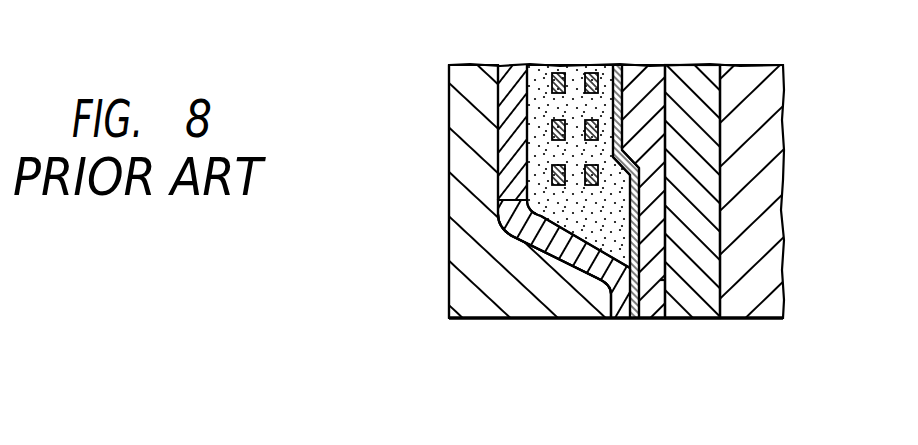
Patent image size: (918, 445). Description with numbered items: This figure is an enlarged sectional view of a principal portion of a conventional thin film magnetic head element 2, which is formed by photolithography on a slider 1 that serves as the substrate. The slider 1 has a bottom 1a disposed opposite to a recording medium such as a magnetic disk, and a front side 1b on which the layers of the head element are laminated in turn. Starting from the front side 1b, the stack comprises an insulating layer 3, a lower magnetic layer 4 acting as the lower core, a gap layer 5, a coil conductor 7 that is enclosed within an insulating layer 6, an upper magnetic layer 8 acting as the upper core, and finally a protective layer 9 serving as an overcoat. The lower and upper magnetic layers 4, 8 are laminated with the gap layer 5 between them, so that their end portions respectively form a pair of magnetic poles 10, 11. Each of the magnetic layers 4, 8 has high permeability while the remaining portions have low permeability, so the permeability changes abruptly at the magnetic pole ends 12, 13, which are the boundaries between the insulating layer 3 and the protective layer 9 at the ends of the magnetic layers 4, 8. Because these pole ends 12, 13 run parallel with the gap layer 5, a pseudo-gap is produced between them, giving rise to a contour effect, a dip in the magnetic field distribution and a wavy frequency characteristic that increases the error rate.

The slider 1 is at (770, 320).
The bottom of the slider 1a is at (738, 320).
The front side of the slider 1b is at (719, 279).
The thin film magnetic head element 2 is at (543, 321).
The insulating layer 3 is at (687, 320).
The lower magnetic layer 4 is at (652, 320).
The gap layer 5 is at (633, 320).
The insulating layer 6 is at (580, 67).
The coil conductor 7 is at (557, 68).
The upper magnetic layer 8 is at (617, 320).
The protective layer 9 is at (487, 312).
The magnetic pole 10 is at (660, 280).
The magnetic pole 11 is at (613, 289).
The magnetic pole end 12 is at (665, 320).
The magnetic pole end 13 is at (610, 318).